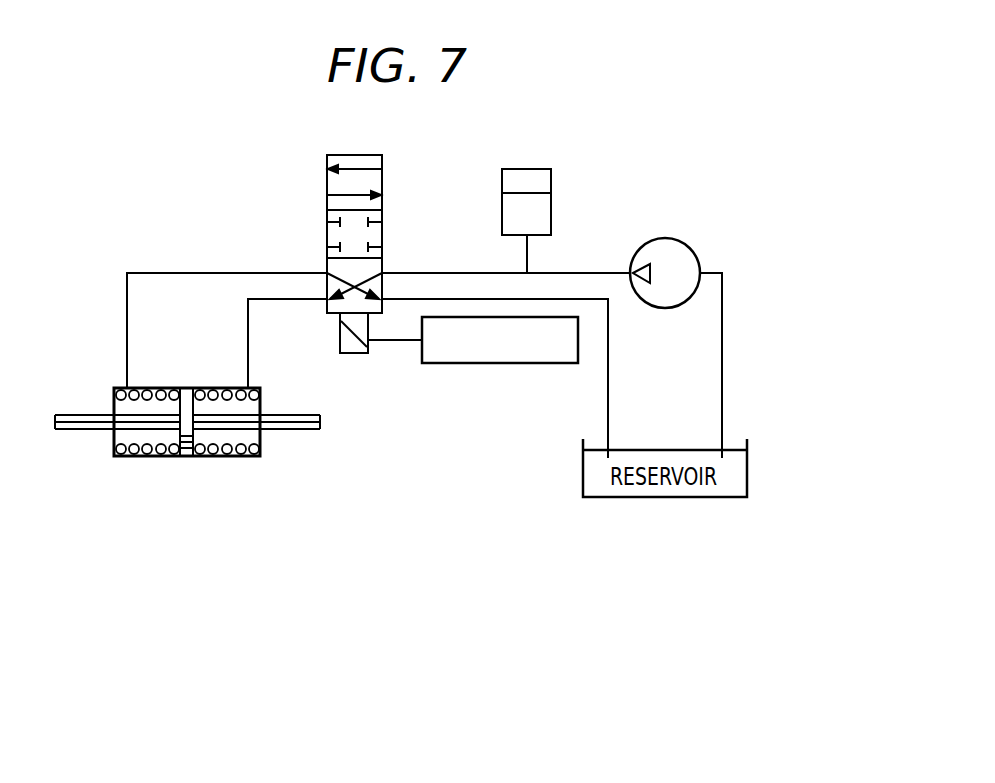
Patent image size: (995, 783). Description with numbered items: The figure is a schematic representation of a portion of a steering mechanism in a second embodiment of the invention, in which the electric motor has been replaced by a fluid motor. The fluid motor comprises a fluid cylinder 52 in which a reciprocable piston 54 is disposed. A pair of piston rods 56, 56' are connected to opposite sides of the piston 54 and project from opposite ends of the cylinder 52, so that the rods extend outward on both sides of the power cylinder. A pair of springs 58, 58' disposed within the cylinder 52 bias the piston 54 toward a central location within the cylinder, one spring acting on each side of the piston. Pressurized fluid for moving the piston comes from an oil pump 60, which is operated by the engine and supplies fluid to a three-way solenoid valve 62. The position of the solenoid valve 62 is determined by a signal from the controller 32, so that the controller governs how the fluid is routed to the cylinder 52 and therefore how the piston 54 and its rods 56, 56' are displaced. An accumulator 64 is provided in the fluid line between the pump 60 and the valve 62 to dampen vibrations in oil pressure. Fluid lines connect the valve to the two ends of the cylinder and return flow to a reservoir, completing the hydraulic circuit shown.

The three-way solenoid valve 62 is at (382, 179).
The accumulator 64 is at (551, 181).
The oil pump 60 is at (692, 250).
The controller 32 is at (497, 363).
The fluid cylinder 52 is at (131, 468).
The piston 54 is at (187, 457).
The piston rod 56 is at (115, 457).
The piston rod 56' is at (260, 398).
The spring 58 is at (147, 393).
The spring 58' is at (227, 454).